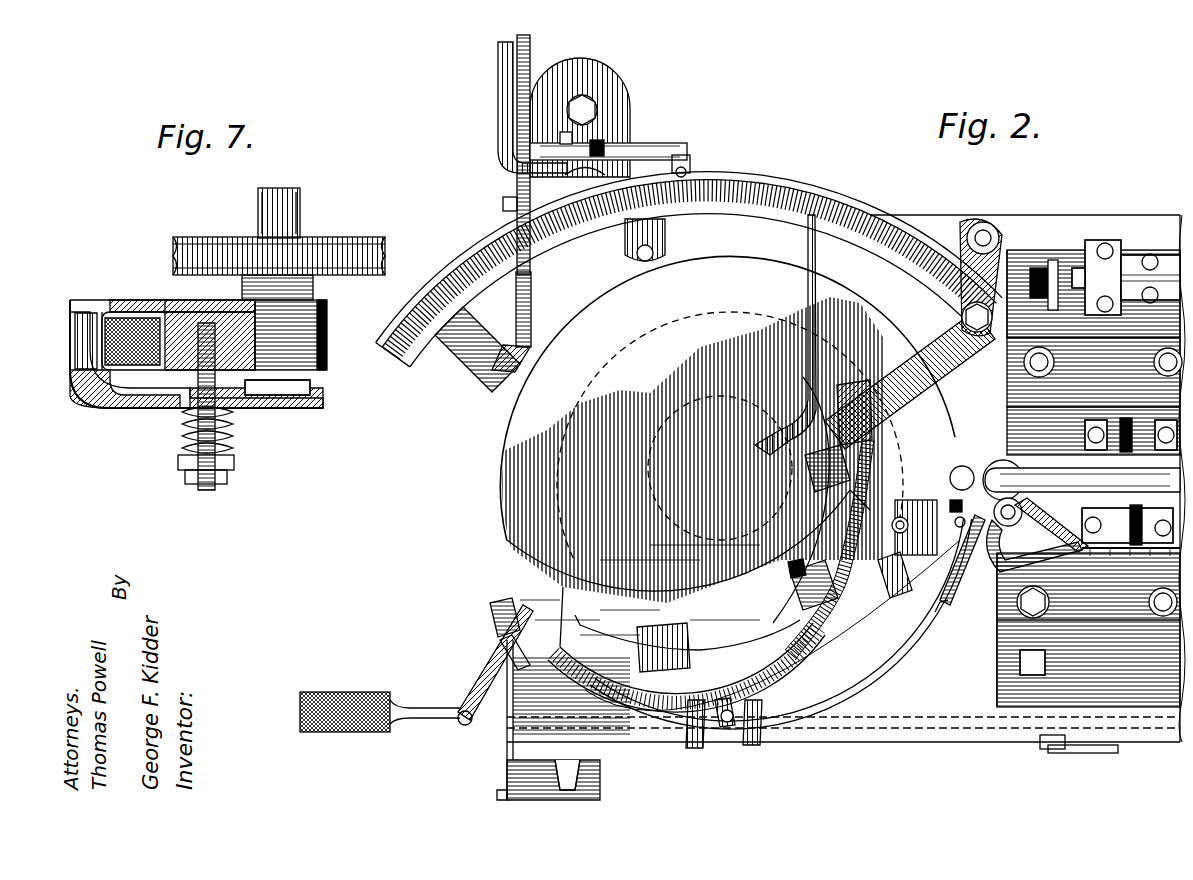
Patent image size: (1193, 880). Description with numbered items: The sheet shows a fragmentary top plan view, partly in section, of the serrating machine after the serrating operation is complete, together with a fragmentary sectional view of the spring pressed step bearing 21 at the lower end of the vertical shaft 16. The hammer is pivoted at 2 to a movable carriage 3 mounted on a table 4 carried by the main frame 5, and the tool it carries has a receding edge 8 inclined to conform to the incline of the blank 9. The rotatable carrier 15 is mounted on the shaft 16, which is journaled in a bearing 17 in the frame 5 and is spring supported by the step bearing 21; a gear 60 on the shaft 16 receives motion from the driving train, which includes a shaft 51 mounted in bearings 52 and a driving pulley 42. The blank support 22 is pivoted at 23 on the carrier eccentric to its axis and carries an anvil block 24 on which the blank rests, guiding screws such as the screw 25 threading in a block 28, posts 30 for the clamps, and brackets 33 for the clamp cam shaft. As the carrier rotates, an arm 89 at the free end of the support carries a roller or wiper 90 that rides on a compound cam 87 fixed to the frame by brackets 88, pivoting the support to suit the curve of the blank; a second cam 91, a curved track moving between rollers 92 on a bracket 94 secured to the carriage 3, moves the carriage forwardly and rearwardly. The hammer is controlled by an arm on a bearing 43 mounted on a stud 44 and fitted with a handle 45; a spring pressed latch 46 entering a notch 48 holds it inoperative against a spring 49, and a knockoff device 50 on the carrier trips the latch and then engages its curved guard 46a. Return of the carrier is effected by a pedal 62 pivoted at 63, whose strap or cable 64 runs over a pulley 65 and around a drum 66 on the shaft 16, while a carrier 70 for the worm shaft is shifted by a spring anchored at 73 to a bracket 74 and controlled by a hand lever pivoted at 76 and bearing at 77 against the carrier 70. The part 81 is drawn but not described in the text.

In FIG. 2, the pivot 2 is at (1082, 480).
In FIG. 2, the movable carriage 3 is at (1050, 450).
In FIG. 2, the table 4 is at (1089, 522).
In FIG. 7, the main frame 5 is at (125, 300).
In FIG. 2, the main frame 5 is at (990, 757).
In FIG. 2, the receding edge of the tool 8 is at (845, 468).
In FIG. 2, the blank 9 is at (868, 530).
In FIG. 2, the carrier 15 is at (725, 429).
In FIG. 7, the vertical shaft 16 is at (298, 216).
In FIG. 7, the bearing 17 is at (290, 334).
In FIG. 7, the spring pressed step bearing 21 is at (240, 445).
In FIG. 2, the support 22 is at (688, 601).
In FIG. 2, the pivot 23 is at (810, 620).
In FIG. 2, the anvil block 24 is at (825, 648).
In FIG. 2, the screw 25 is at (797, 562).
In FIG. 2, the block 28 is at (814, 585).
In FIG. 2, the post 30 is at (722, 746).
In FIG. 2, the bracket 33 is at (688, 758).
In FIG. 2, the driving pulley 42 is at (1155, 552).
In FIG. 2, the bearing 43 is at (1020, 518).
In FIG. 2, the stud 44 is at (1051, 527).
In FIG. 2, the handle 45 is at (968, 575).
In FIG. 2, the spring pressed latch 46 is at (1034, 557).
In FIG. 2, the curved guard 46a is at (955, 606).
In FIG. 2, the notch 48 is at (960, 509).
In FIG. 2, the spring 49 is at (1082, 514).
In FIG. 2, the knockoff device 50 is at (960, 526).
In FIG. 2, the shaft 51 is at (1136, 256).
In FIG. 2, the bearings 52 is at (1095, 248).
In FIG. 7, the gear 60 is at (352, 244).
In FIG. 2, the pedal 62 is at (375, 692).
In FIG. 2, the pivot 63 is at (1060, 750).
In FIG. 2, the strap or cable 64 is at (650, 462).
In FIG. 2, the pulley 65 is at (465, 682).
In FIG. 2, the drum 66 is at (742, 400).
In FIG. 2, the carrier 70 is at (524, 318).
In FIG. 2, the spring connection 73 is at (690, 166).
In FIG. 2, the bracket 74 is at (640, 148).
In FIG. 2, the pivot 76 is at (503, 205).
In FIG. 2, the bearing portion 77 is at (530, 281).
In FIG. 2, the rod 81 is at (510, 627).
In FIG. 2, the cam 87 is at (728, 188).
In FIG. 2, the brackets 88 is at (646, 222).
In FIG. 2, the arm 89 is at (940, 340).
In FIG. 2, the roller or wiper 90 is at (962, 314).
In FIG. 2, the cam 91 is at (892, 640).
In FIG. 2, the rollers 92 is at (962, 466).
In FIG. 2, the bracket 94 is at (1003, 460).